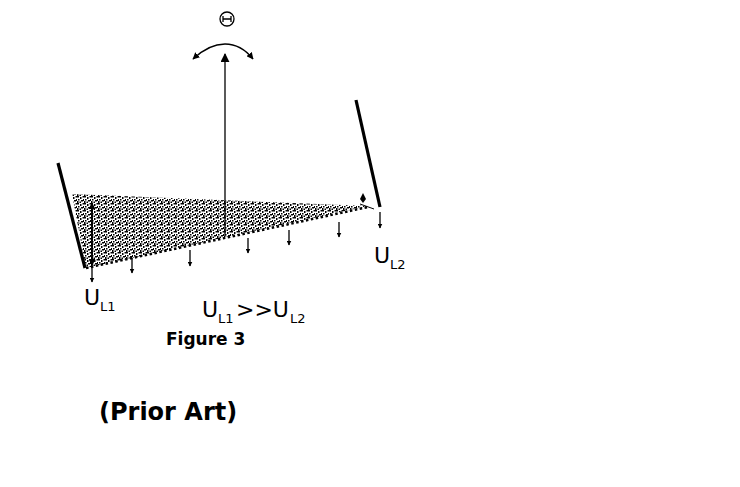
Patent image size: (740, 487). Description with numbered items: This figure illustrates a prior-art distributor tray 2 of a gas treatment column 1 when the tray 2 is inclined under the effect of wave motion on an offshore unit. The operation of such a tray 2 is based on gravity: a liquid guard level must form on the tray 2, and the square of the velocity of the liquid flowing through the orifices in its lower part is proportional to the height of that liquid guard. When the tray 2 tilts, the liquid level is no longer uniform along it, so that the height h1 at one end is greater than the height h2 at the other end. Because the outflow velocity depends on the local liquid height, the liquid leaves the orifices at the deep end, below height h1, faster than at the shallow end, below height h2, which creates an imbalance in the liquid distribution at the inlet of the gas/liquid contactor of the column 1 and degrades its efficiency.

The gas treatment column 1 is at (372, 128).
The distributor tray 2 is at (378, 210).
The liquid level height at one end of the inclined tray h1 is at (108, 234).
The liquid level height at the other end of the inclined tray h2 is at (398, 209).